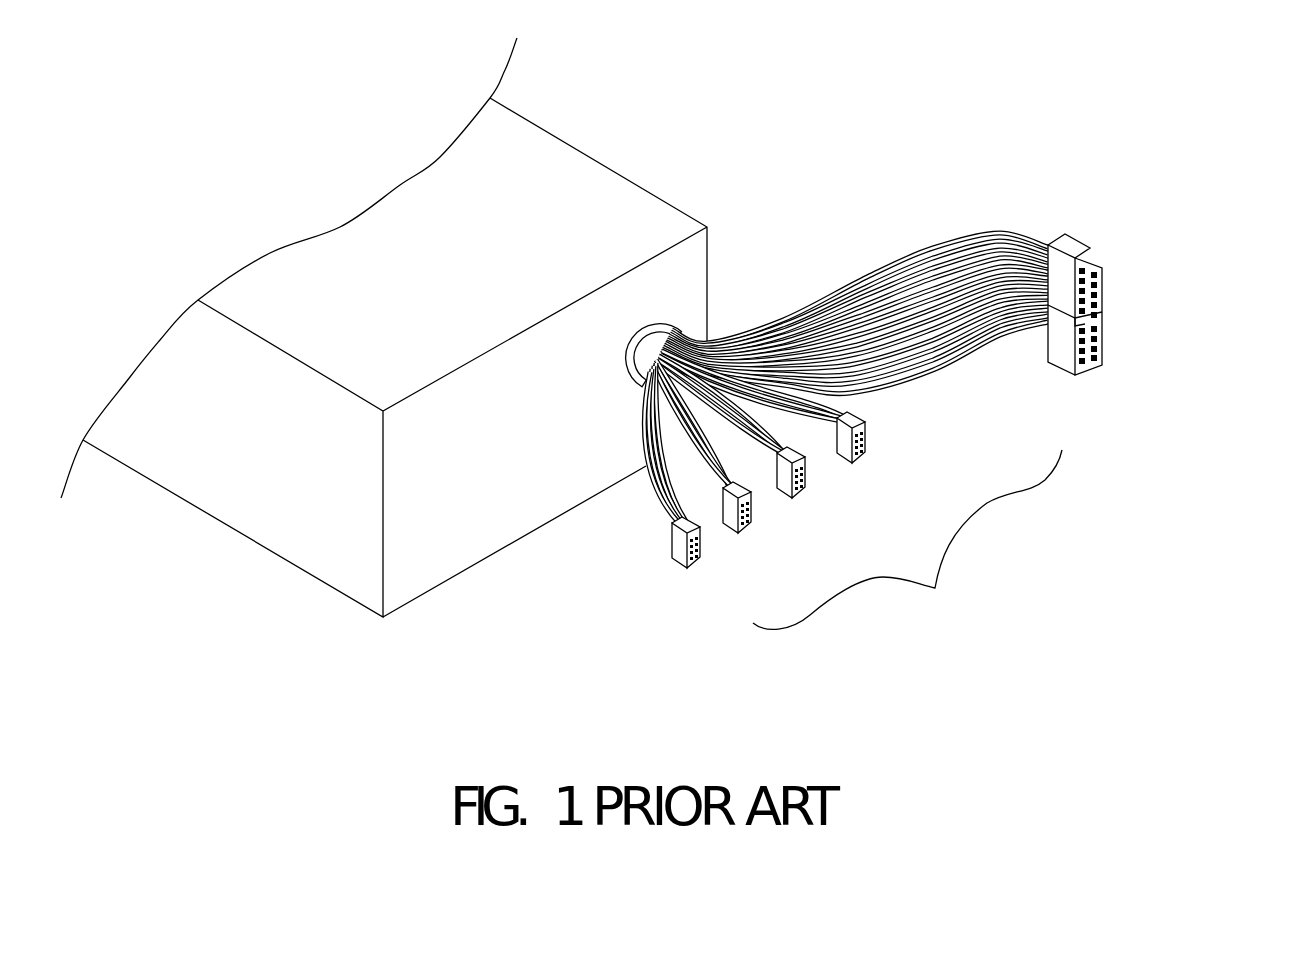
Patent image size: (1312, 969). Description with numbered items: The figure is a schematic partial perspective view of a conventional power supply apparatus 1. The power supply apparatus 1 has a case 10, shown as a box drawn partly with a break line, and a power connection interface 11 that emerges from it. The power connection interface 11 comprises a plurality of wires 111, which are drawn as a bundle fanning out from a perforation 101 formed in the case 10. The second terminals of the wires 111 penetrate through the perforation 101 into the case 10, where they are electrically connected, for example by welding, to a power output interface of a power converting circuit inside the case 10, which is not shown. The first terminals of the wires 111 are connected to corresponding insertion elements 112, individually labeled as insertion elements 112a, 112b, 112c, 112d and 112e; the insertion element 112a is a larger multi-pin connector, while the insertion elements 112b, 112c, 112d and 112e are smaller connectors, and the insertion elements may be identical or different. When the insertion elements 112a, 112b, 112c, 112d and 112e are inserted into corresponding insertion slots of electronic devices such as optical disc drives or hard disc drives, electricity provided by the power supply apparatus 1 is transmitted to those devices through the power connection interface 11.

The power supply apparatus 1 is at (1283, 60).
The case 10 is at (543, 182).
The perforation 101 is at (673, 298).
The power connection interface 11 is at (873, 377).
The wires 111 is at (925, 267).
The insertion elements 112 is at (887, 431).
The insertion element 112a is at (1062, 355).
The insertion element 112b is at (863, 463).
The insertion element 112c is at (803, 498).
The insertion element 112d is at (752, 525).
The insertion element 112e is at (697, 563).